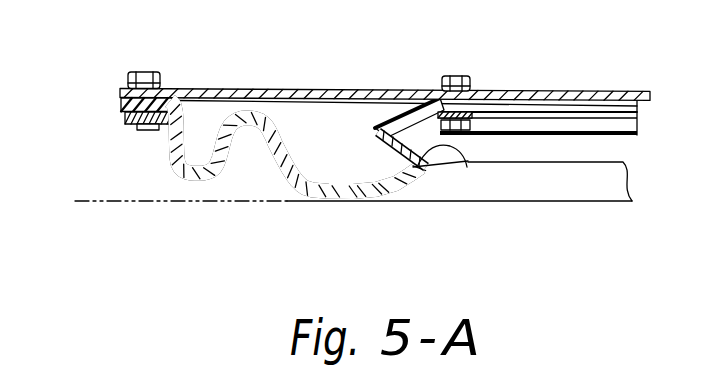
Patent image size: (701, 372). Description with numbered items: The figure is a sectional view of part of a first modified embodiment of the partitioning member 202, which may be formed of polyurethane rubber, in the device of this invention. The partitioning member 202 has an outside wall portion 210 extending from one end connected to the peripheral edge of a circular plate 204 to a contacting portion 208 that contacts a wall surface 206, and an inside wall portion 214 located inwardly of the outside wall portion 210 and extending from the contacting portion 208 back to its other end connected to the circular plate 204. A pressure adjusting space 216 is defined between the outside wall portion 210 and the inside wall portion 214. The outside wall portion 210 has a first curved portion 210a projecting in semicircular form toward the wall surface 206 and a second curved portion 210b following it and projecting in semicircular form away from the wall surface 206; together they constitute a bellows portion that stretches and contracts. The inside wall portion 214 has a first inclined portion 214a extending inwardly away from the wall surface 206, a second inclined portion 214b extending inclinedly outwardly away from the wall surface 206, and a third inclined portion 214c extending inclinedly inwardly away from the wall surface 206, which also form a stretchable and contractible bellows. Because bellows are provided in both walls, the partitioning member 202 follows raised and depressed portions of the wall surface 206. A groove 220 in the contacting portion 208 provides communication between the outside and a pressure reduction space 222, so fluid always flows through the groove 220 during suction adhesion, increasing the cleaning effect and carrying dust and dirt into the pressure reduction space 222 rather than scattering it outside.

The partitioning member 202 is at (271, 184).
The circular plate 204 is at (330, 89).
The wall surface 206 is at (118, 200).
The contacting portion 208 is at (392, 197).
The outside wall portion 210 is at (262, 160).
The first curved portion 210a is at (178, 170).
The second curved portion 210b is at (249, 111).
The inside wall portion 214 is at (415, 182).
The first inclined portion 214a is at (413, 176).
The second inclined portion 214b is at (452, 155).
The third inclined portion 214c is at (417, 90).
The pressure adjusting space 216 is at (210, 108).
The groove 220 is at (343, 203).
The pressure reduction space 222 is at (578, 196).